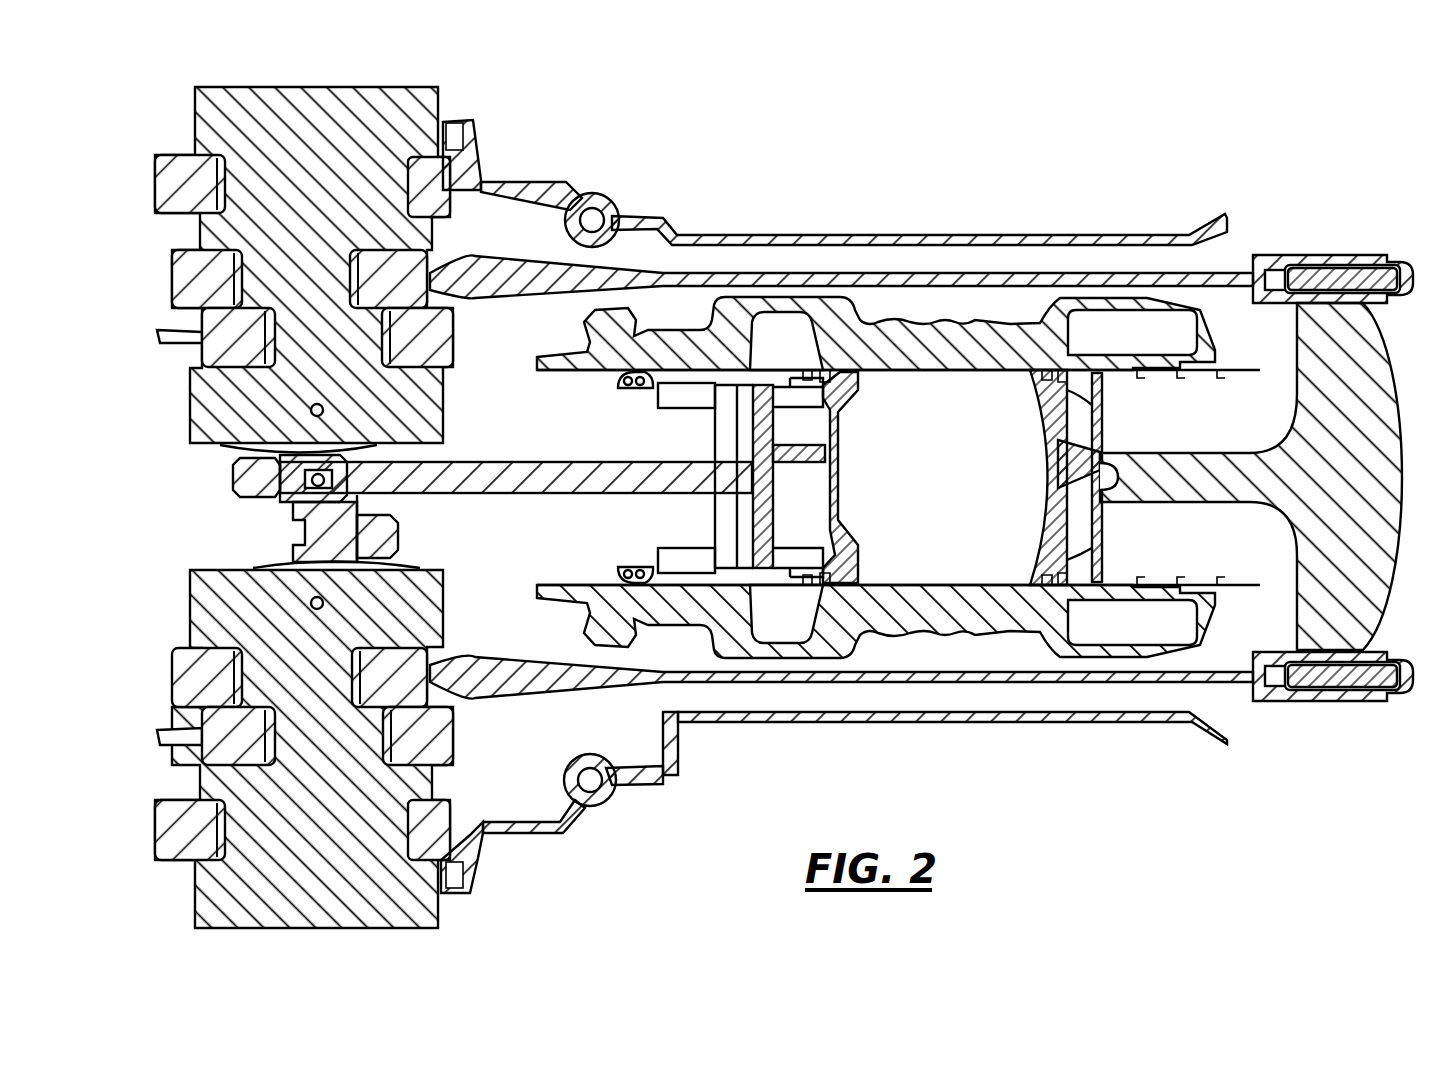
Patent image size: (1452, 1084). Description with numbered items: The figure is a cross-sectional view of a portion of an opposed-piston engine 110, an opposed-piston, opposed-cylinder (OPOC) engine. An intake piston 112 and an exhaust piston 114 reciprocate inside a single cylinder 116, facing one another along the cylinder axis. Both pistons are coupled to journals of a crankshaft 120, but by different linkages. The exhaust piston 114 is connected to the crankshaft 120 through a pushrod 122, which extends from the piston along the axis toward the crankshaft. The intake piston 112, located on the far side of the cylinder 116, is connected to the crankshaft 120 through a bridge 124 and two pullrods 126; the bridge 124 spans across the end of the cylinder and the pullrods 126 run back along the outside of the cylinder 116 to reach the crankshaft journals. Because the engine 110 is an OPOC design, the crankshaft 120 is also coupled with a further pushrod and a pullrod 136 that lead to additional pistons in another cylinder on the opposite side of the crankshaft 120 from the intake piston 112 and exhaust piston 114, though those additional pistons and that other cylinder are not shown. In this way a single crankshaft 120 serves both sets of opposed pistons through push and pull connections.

The opposed-piston engine 110 is at (1078, 178).
The intake piston 112 is at (1058, 472).
The exhaust piston 114 is at (830, 452).
The cylinder 116 is at (910, 385).
The crankshaft 120 is at (345, 140).
The pushrod 122 is at (552, 473).
The bridge 124 is at (1383, 410).
The pullrods 126 is at (1222, 268).
The pullrod 136 is at (220, 341).